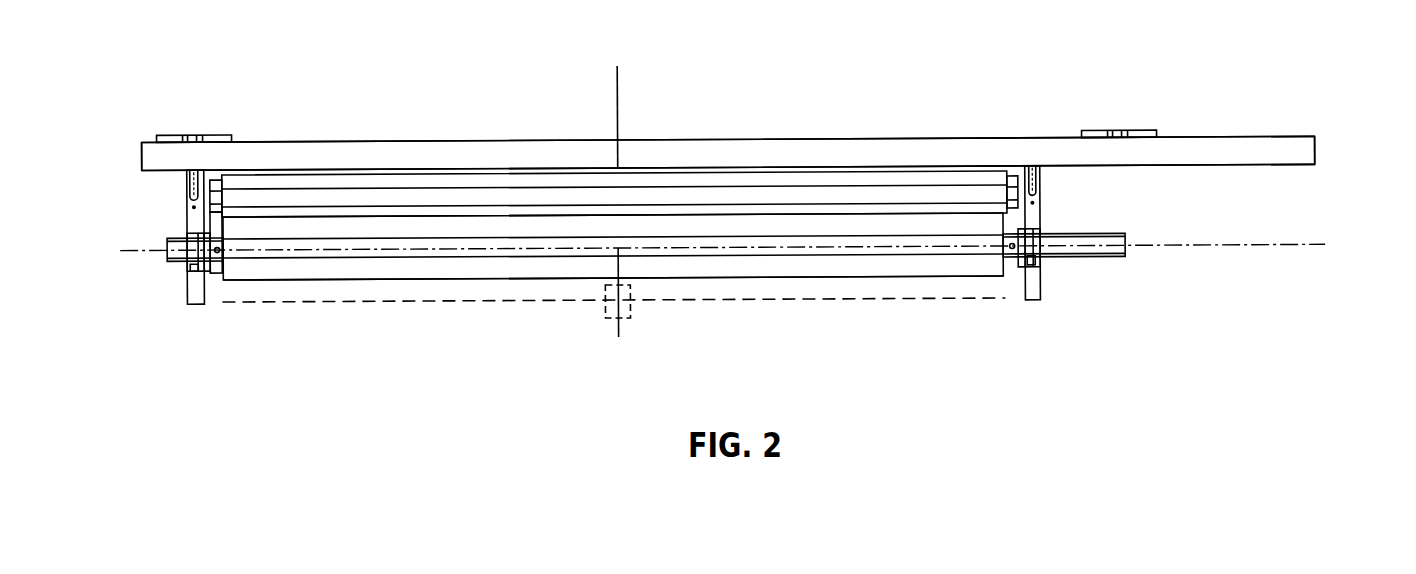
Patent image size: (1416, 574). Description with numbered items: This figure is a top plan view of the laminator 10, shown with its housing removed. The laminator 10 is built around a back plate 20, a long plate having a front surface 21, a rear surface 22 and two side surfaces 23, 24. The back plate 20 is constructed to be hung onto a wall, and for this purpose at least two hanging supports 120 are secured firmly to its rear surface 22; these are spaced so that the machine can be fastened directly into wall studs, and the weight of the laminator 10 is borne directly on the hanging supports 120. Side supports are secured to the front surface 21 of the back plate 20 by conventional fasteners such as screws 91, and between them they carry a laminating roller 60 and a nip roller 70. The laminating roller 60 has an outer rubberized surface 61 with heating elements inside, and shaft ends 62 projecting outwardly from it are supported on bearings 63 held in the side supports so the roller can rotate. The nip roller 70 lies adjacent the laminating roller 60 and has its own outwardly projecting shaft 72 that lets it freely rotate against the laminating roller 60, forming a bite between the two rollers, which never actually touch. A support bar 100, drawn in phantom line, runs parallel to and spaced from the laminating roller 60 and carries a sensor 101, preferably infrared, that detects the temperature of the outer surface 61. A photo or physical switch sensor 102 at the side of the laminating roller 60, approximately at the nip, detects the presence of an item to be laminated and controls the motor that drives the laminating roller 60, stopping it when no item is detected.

The laminator 10 is at (1286, 91).
The back plate 20 is at (1294, 143).
The front surface 21 is at (1262, 170).
The rear surface 22 is at (1209, 138).
The side surface 23 is at (1317, 156).
The side surface 24 is at (140, 149).
The laminating roller 60 is at (795, 265).
The outer rubberized surface 61 is at (855, 270).
The shaft ends 62 is at (1051, 220).
The bearings 63 is at (182, 266).
The nip roller 70 is at (848, 174).
The shaft 72 is at (221, 179).
The screws 91 is at (1043, 175).
The support bar 100 is at (683, 304).
The sensor 101 is at (604, 318).
The switch sensor 102 is at (219, 264).
The hanging supports 120 is at (173, 132).